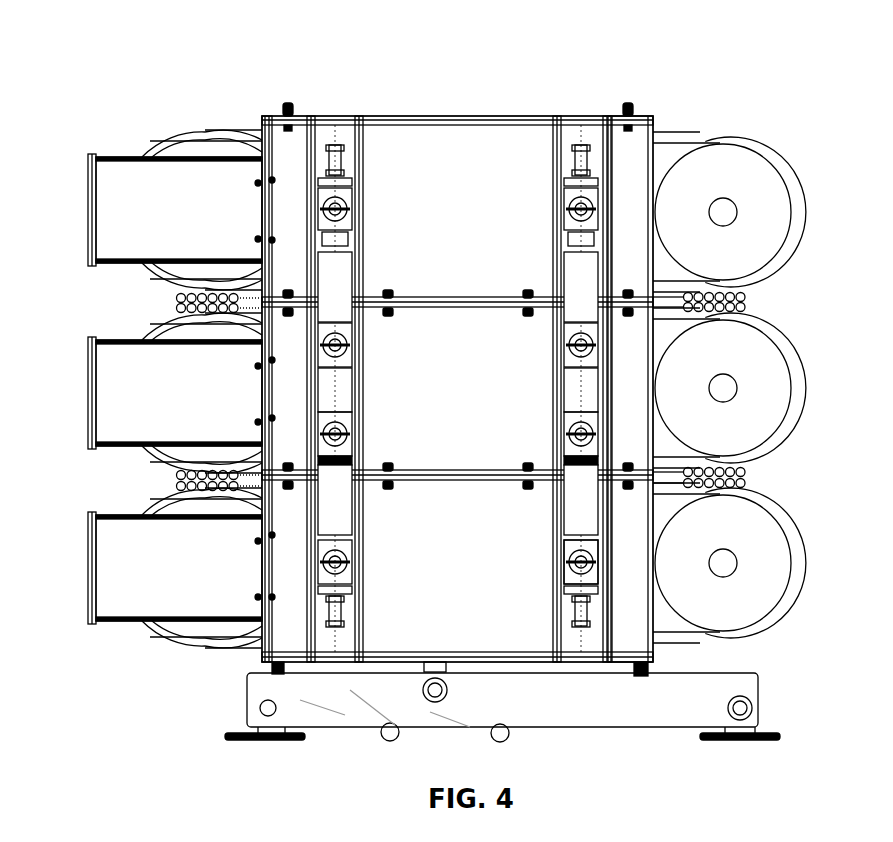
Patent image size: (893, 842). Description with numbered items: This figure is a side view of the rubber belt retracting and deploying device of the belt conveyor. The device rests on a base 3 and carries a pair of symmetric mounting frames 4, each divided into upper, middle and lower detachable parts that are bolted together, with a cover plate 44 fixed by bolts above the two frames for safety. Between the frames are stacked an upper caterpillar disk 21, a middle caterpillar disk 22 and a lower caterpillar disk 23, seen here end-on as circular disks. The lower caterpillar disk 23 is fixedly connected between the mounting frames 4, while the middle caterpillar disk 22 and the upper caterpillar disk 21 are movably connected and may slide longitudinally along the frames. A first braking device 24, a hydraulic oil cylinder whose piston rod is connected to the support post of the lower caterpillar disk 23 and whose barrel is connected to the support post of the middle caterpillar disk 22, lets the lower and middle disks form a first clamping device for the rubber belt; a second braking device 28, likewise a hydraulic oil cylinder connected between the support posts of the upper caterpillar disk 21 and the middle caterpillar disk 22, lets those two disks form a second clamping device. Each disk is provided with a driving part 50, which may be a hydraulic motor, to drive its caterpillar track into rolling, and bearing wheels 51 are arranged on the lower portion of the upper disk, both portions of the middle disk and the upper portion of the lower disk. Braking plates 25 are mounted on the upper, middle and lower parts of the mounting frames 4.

The base 3 is at (651, 712).
The mounting frame 4 is at (400, 200).
The upper caterpillar disk 21 is at (755, 200).
The middle caterpillar disk 22 is at (757, 385).
The lower caterpillar disk 23 is at (757, 560).
The first braking device 24 is at (572, 270).
The braking plate 25 is at (110, 215).
The second braking device 28 is at (615, 535).
The cover plate 44 is at (470, 117).
The driving part 50 is at (727, 205).
The bearing wheels 51 is at (176, 308).